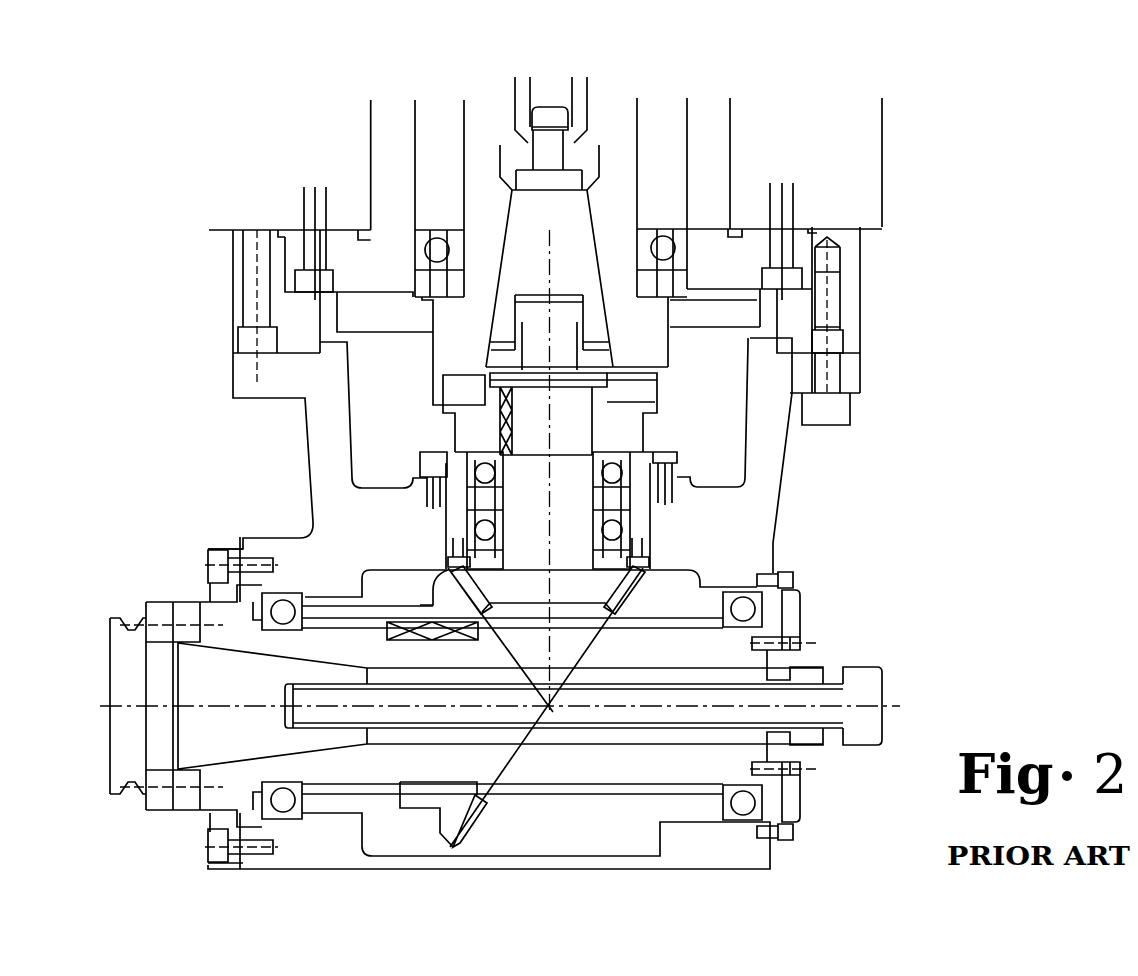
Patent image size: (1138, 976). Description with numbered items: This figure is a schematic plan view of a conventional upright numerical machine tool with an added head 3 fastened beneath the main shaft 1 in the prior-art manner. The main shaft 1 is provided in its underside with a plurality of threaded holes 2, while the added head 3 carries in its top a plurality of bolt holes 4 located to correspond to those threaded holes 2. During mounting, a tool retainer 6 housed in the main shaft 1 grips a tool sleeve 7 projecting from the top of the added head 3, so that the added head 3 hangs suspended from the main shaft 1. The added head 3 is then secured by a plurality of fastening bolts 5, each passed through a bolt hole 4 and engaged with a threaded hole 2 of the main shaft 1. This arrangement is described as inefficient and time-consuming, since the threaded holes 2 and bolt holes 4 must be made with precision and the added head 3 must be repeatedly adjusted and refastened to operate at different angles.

The main shaft 1 is at (853, 260).
The threaded holes 2 is at (843, 313).
The added head 3 is at (762, 512).
The bolt holes 4 is at (843, 377).
The fastening bolts 5 is at (837, 415).
The tool retainer 6 is at (580, 97).
The tool sleeve 7 is at (515, 220).